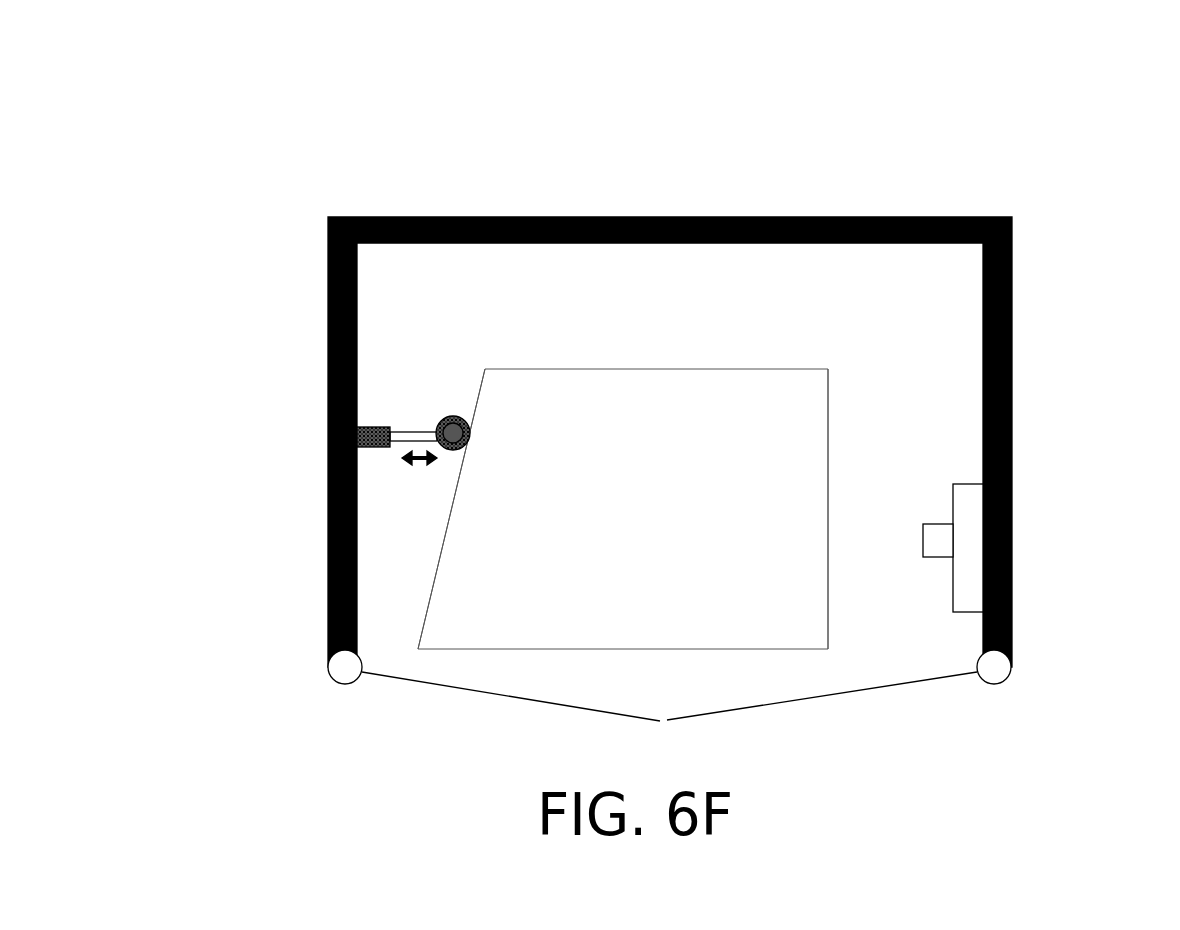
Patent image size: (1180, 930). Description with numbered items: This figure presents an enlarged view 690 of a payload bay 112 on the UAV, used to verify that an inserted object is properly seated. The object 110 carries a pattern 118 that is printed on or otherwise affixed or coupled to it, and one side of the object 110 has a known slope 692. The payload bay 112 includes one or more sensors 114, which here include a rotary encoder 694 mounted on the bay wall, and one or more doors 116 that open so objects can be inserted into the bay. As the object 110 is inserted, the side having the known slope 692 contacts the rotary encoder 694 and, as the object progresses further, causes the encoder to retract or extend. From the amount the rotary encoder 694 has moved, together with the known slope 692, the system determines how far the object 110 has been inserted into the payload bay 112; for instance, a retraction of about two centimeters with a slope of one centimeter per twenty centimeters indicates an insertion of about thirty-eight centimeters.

The enlarged view 690 is at (1083, 93).
The payload bay 112 is at (305, 207).
The object 110 is at (668, 363).
The pattern 118 is at (833, 507).
The known slope 692 is at (432, 563).
The rotary encoder 694 is at (405, 425).
The sensor 114 is at (945, 593).
The door 116 is at (459, 699).